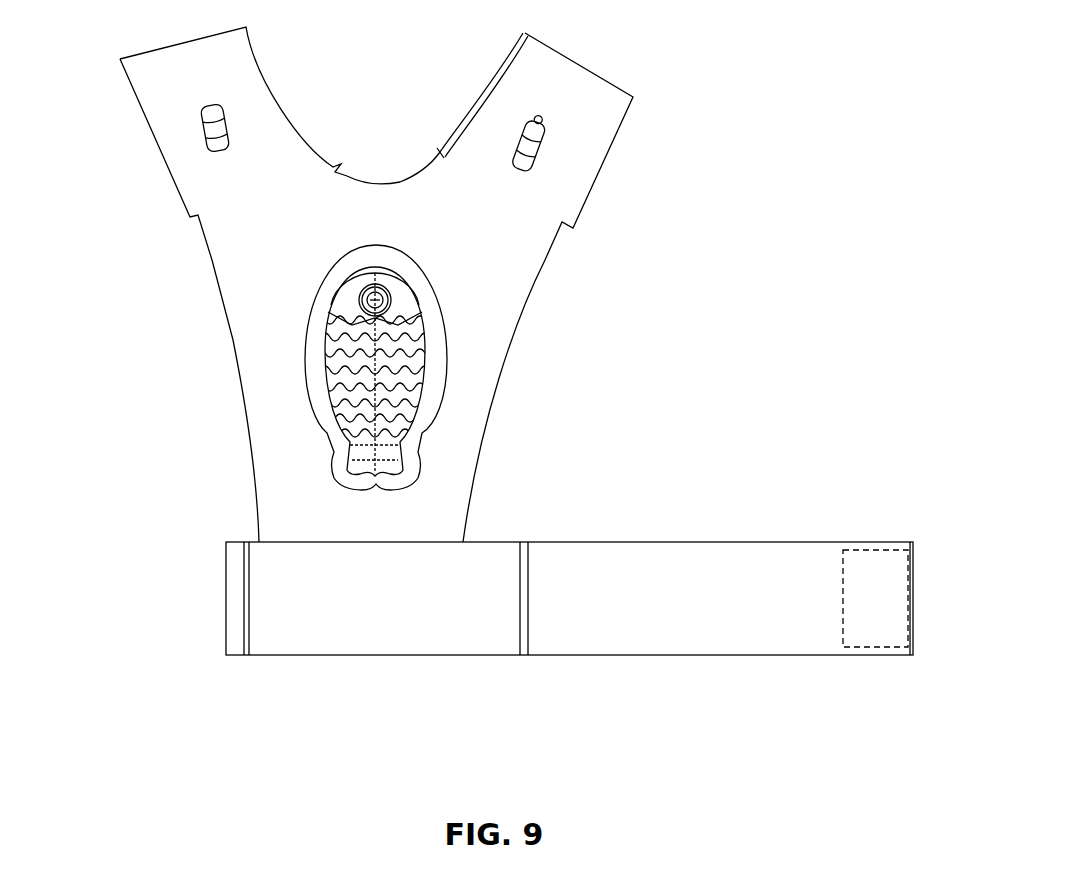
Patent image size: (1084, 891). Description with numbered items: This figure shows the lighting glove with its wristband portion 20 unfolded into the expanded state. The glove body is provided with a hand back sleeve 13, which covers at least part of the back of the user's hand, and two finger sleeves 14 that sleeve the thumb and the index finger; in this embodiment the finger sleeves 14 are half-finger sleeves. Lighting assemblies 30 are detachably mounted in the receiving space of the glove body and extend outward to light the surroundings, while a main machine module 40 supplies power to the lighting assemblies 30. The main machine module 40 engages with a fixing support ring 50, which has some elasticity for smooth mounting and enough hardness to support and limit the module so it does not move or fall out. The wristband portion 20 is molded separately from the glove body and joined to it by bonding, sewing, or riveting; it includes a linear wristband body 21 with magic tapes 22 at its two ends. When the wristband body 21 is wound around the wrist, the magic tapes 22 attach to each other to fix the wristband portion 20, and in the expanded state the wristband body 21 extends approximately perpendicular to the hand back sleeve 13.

The hand back sleeve 13 is at (507, 396).
The finger sleeves 14 is at (598, 197).
The wristband portion 20 is at (569, 667).
The wristband body 21 is at (587, 633).
The magic tapes 22 is at (408, 632).
The lighting assemblies 30 is at (223, 130).
The main machine module 40 is at (320, 346).
The fixing support ring 50 is at (333, 438).